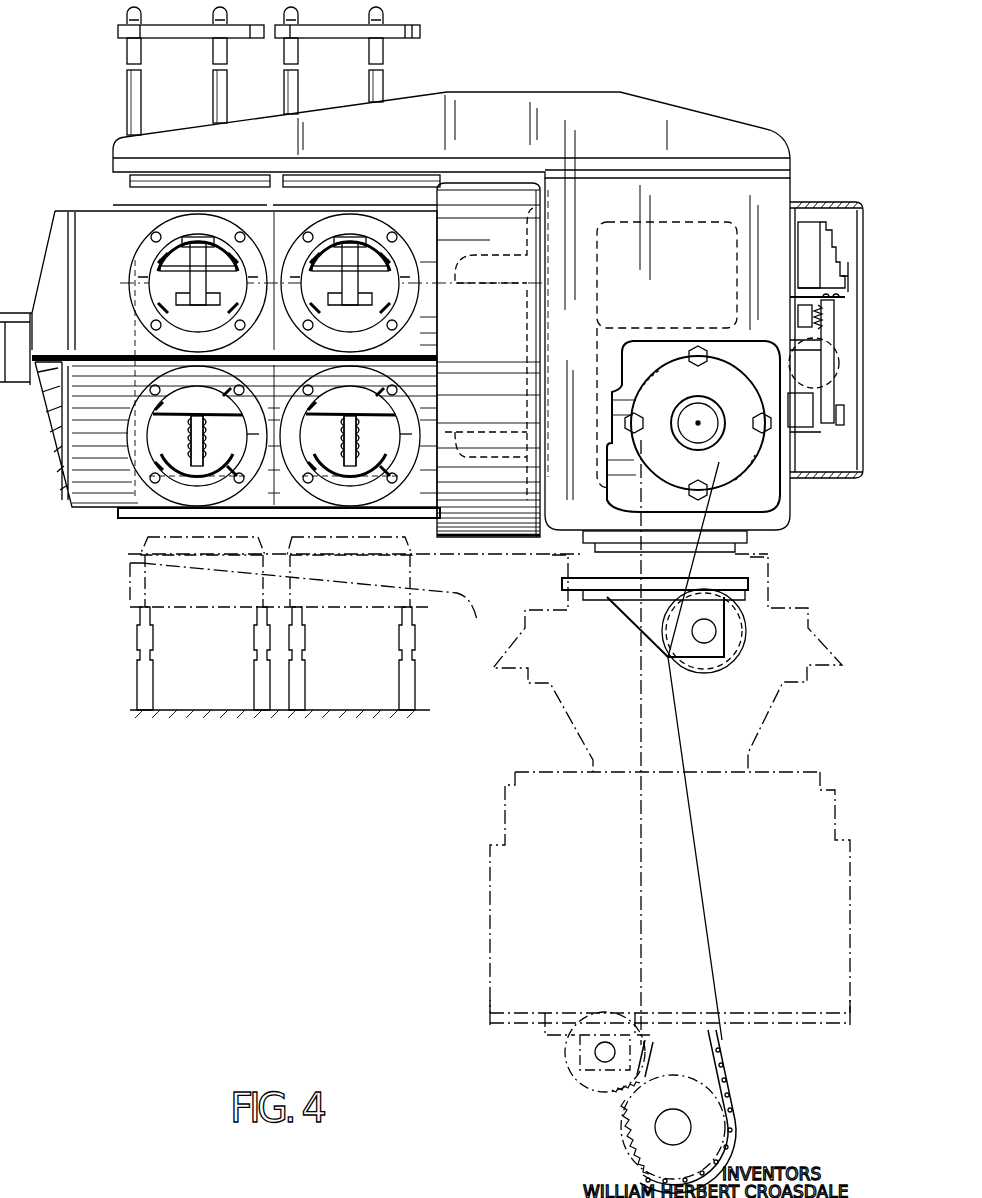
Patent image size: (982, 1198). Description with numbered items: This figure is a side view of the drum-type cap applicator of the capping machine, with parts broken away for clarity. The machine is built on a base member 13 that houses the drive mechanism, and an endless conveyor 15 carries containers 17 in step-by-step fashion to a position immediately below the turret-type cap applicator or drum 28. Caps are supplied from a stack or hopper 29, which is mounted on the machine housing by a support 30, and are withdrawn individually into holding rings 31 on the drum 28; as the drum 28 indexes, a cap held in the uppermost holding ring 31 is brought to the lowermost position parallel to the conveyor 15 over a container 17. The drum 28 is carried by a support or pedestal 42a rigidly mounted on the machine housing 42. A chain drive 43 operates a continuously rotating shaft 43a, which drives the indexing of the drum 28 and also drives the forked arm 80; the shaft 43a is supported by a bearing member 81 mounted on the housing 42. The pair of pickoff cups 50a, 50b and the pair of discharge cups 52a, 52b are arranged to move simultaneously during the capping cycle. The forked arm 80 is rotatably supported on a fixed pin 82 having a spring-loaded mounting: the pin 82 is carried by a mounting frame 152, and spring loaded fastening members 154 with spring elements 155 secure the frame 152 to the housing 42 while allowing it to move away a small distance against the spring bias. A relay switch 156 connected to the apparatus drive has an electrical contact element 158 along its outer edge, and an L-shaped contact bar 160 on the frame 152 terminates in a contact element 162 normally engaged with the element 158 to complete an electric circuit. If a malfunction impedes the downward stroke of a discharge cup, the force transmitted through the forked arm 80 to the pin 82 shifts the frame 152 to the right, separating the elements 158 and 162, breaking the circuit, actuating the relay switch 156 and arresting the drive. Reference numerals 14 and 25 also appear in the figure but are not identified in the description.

The base member 13 is at (403, 520).
The section line 14 is at (196, 145).
The endless conveyor 15 is at (483, 617).
The containers 17 is at (288, 578).
The guide pins 25 is at (368, 653).
The drum 28 is at (88, 225).
The hopper 29 is at (112, 84).
The support 30 is at (510, 100).
The holding ring 31 is at (135, 258).
The machine housing 42 is at (605, 190).
The pedestal 42a is at (477, 258).
The chain drive 43 is at (722, 1048).
The continuously rotating shaft 43a is at (706, 434).
The pickoff cup 50a is at (385, 260).
The pickoff cup 50b is at (252, 258).
The discharge cup 52a is at (345, 462).
The discharge cup 52b is at (212, 464).
The forked arm 80 is at (638, 355).
The bearing member 81 is at (719, 462).
The fixed pin 82 is at (805, 362).
The mounting frame 152 is at (857, 445).
The spring loaded fastening members 154 is at (805, 305).
The spring elements 155 is at (798, 312).
The relay switch 156 is at (805, 243).
The electrical contact element 158 is at (828, 250).
The L-shaped contact bar 160 is at (800, 271).
The contact element 162 is at (843, 264).